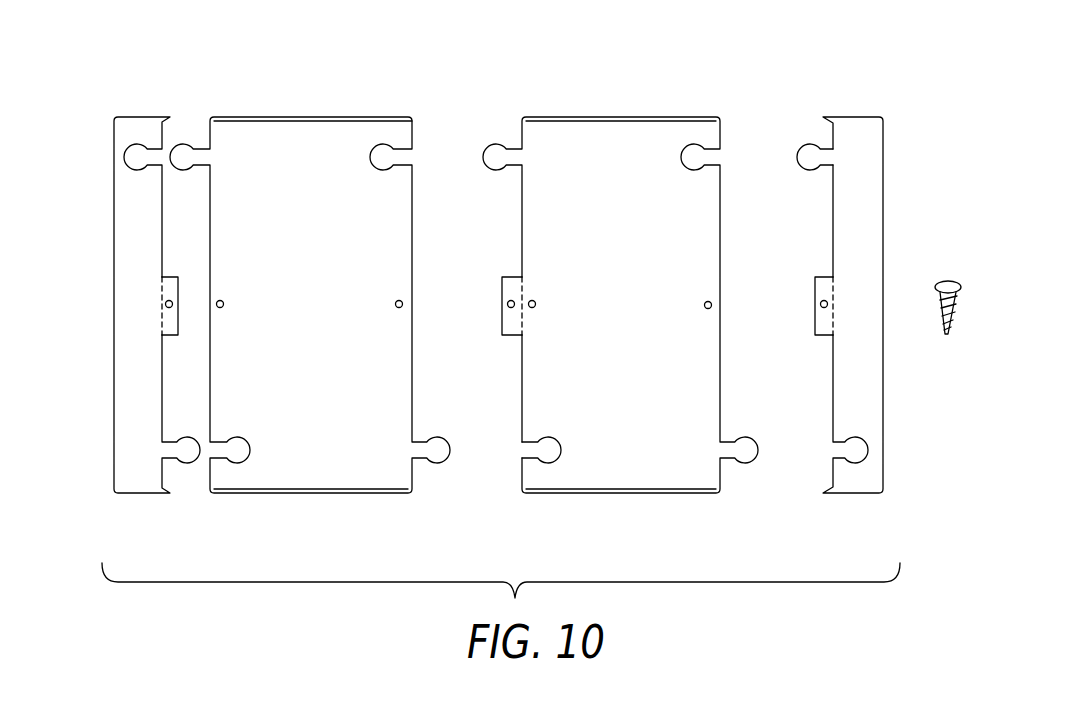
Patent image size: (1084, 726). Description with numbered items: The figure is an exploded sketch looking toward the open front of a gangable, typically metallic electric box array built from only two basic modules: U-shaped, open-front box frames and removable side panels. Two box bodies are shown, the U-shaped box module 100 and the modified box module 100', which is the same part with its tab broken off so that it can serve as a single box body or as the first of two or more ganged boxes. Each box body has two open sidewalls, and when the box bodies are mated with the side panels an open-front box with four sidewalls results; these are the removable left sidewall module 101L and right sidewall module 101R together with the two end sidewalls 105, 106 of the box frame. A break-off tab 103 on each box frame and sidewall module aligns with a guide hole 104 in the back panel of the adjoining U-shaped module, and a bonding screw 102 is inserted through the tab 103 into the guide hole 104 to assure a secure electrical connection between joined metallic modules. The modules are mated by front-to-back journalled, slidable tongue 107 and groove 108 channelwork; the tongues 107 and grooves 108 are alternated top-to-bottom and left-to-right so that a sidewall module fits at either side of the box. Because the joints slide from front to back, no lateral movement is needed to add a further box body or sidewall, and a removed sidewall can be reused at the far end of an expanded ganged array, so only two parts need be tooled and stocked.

The left sidewall module 101L is at (147, 117).
The right sidewall module 101R is at (870, 172).
The U-shaped box module 100 is at (620, 275).
The modified box module 100' is at (310, 283).
The bonding screw 102 is at (943, 310).
The tab 103 is at (818, 322).
The guide hole 104 is at (711, 301).
The end sidewall 105 is at (253, 117).
The end sidewall 106 is at (343, 493).
The tongue 107 is at (812, 147).
The groove 108 is at (530, 457).